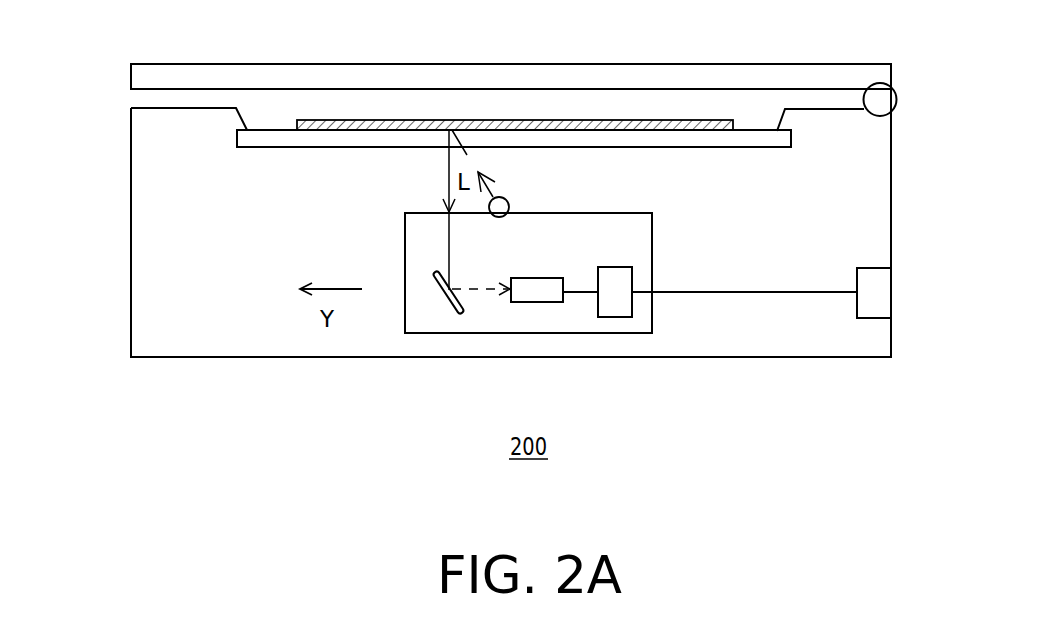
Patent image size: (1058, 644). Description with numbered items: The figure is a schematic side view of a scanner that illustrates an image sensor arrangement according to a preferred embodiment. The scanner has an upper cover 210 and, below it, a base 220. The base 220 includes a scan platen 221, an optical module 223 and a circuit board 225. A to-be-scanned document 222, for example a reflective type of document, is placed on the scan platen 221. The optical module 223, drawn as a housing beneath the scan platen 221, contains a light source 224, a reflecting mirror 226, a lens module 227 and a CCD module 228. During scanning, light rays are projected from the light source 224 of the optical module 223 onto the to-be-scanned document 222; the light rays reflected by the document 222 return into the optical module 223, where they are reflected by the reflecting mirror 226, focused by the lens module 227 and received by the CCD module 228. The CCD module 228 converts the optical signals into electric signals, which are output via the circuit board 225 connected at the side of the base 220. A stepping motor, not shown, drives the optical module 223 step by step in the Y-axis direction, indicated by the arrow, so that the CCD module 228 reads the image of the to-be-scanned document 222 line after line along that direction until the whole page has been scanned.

The upper cover 210 is at (147, 77).
The base 220 is at (153, 173).
The scan platen 221 is at (778, 140).
The to-be-scanned document 222 is at (668, 120).
The optical module 223 is at (652, 238).
The light source 224 is at (509, 207).
The circuit board 225 is at (875, 302).
The reflecting mirror 226 is at (447, 303).
The lens module 227 is at (535, 293).
The CCD module 228 is at (615, 302).